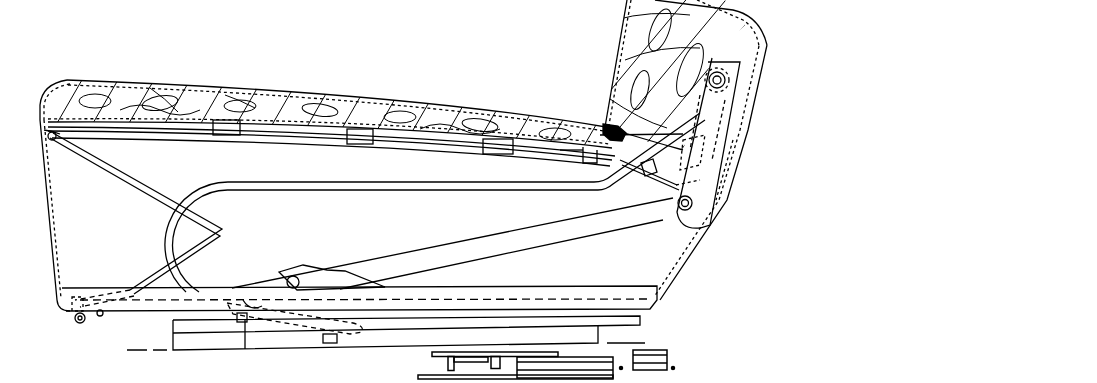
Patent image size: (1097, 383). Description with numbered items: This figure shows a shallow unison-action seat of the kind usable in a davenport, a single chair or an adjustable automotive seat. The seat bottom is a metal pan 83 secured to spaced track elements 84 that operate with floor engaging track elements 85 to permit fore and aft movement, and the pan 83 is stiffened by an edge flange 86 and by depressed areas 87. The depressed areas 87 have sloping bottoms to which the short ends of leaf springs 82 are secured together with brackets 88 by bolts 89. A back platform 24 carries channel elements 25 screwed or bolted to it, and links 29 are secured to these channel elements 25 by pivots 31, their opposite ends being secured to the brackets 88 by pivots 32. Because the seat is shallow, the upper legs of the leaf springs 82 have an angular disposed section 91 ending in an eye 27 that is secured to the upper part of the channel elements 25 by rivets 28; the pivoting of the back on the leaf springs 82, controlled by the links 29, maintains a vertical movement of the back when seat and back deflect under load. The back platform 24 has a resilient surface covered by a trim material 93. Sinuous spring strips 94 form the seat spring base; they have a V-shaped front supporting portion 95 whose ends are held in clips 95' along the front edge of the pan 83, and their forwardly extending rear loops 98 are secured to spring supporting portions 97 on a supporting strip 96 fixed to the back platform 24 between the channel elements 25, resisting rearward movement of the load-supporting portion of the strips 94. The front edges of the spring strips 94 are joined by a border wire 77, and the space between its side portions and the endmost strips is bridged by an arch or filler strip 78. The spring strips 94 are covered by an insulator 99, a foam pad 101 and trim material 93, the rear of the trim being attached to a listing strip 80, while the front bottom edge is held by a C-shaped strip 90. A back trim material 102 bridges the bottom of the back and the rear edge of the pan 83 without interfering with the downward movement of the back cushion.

The back platform 24 is at (737, 123).
The channel elements 25 is at (710, 143).
The eye 27 is at (757, 30).
The rivets 28 is at (727, 80).
The links 29 is at (563, 235).
The pivots 31 is at (683, 212).
The pivots 32 is at (297, 280).
The border wire 77 is at (77, 134).
The arch or filler strip 78 is at (247, 130).
The listing strip 80 is at (585, 160).
The leaf springs 82 is at (447, 185).
The metal pan 83 is at (133, 315).
The track elements 84 is at (643, 317).
The floor engaging track elements 85 is at (230, 343).
The edge flange 86 is at (594, 288).
The depressed areas 87 is at (360, 340).
The brackets 88 is at (263, 283).
The bolts 89 is at (233, 320).
The C-shaped strip 90 is at (73, 318).
The angular disposed section 91 is at (613, 125).
The trim material 93 is at (312, 90).
The sinuous spring strips 94 is at (423, 145).
The V-shaped front supporting portion 95 is at (136, 213).
The clips 95' is at (103, 283).
The supporting strip 96 is at (712, 160).
The spring supporting portions 97 is at (695, 155).
The rear loops 98 is at (675, 186).
The insulator 99 is at (168, 112).
The foam pad 101 is at (237, 102).
The back trim material 102 is at (697, 263).